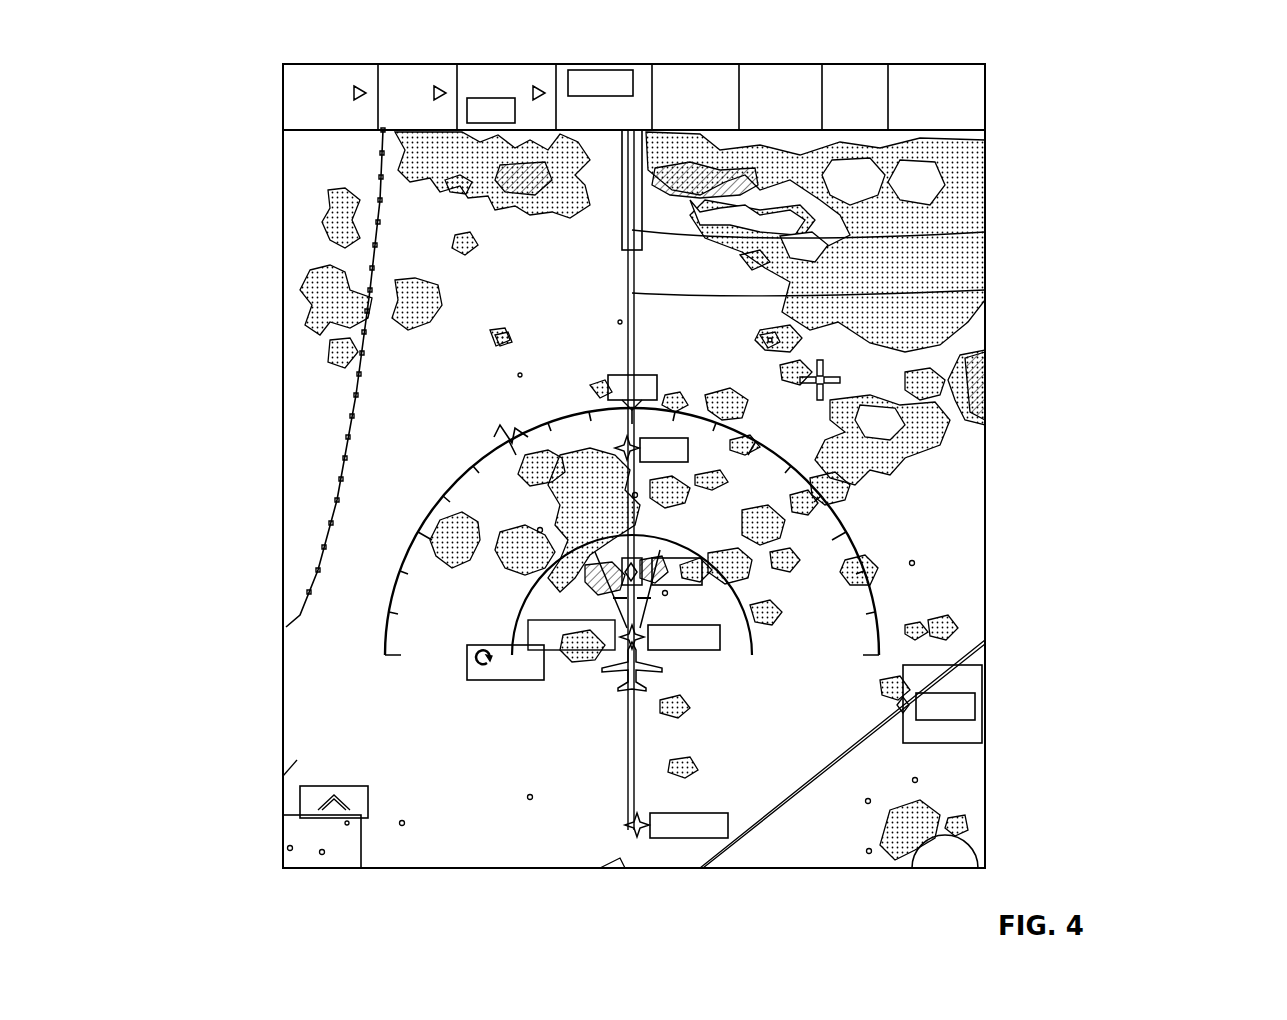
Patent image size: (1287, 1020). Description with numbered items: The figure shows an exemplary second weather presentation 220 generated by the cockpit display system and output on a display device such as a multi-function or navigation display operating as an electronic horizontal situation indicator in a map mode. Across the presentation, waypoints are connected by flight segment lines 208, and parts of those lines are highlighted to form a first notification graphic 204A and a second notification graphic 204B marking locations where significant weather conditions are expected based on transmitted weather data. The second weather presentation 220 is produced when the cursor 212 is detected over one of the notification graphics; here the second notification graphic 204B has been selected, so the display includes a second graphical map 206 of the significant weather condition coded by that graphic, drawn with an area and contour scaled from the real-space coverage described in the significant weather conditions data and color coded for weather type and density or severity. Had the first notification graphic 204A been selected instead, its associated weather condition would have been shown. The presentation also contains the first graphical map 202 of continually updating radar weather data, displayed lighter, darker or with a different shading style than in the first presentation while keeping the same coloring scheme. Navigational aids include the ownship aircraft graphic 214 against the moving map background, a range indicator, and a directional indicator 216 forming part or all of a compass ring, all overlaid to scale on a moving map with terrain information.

The second weather presentation 220 is at (255, 48).
The first graphical map 202 is at (625, 533).
The first notification graphic 204A is at (643, 230).
The second notification graphic 204B is at (622, 640).
The second graphical map 206 is at (600, 548).
The flight segment lines 208 is at (632, 293).
The cursor 212 is at (660, 630).
The ownship aircraft graphic 214 is at (600, 598).
The directional indicator 216 is at (433, 508).